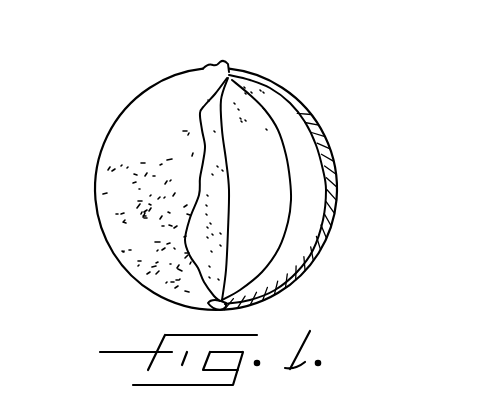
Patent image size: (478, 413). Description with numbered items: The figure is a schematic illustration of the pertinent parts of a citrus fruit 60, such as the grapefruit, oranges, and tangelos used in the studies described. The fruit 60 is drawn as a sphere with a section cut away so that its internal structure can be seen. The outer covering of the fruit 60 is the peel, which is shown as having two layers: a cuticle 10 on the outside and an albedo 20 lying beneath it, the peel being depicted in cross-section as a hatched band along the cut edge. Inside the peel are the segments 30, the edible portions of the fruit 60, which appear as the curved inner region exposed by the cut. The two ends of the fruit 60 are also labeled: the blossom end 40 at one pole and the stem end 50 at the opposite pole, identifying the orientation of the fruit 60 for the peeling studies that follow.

The cuticle 10 is at (299, 102).
The albedo 20 is at (320, 148).
The segments 30 is at (270, 248).
The blossom end 40 is at (226, 64).
The stem end 50 is at (264, 300).
The fruit 60 is at (125, 128).